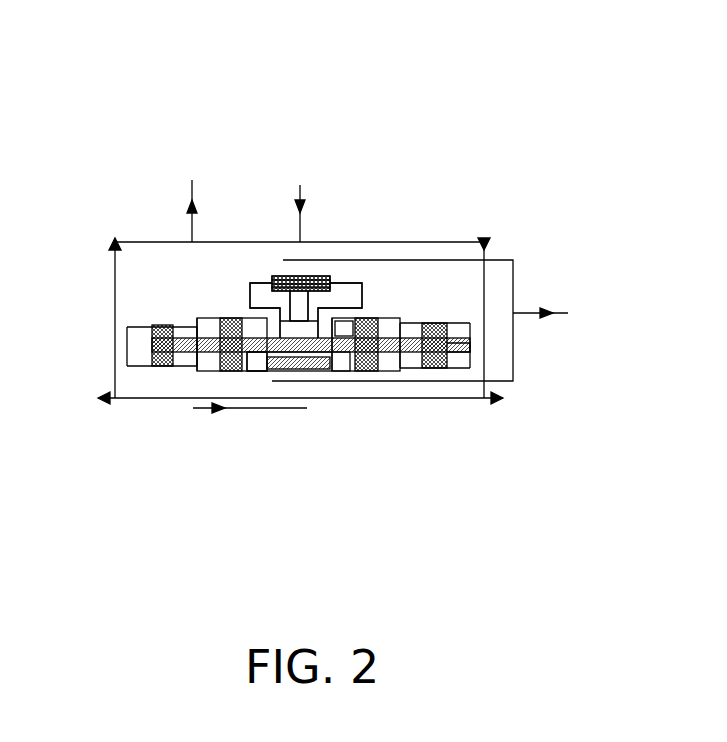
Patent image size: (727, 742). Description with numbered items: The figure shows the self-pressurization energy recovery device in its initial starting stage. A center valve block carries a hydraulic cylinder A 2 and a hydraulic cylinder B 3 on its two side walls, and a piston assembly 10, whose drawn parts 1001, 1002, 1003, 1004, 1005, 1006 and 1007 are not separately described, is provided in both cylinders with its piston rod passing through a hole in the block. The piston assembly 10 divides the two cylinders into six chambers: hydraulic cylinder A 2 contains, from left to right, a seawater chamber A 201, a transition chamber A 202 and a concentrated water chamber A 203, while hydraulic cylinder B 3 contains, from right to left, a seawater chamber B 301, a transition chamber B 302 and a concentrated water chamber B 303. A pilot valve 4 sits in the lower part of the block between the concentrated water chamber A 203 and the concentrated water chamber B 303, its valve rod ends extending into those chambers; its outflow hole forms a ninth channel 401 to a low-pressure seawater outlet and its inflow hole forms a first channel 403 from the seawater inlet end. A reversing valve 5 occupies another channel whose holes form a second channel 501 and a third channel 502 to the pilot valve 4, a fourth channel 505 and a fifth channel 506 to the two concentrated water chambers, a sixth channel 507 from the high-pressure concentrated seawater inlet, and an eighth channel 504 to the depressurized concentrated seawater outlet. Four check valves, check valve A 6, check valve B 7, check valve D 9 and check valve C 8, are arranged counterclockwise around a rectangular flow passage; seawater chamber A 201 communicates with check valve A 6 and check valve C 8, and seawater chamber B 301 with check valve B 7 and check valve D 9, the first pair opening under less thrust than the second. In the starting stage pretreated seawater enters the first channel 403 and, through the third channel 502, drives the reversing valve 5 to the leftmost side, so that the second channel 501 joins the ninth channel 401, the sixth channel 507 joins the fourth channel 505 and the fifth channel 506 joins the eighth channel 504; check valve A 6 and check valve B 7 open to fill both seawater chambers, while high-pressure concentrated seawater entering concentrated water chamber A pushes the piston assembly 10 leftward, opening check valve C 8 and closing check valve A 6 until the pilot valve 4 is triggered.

The hydraulic cylinder A 2 is at (70, 316).
The seawater chamber A 201 is at (140, 356).
The transition chamber A 202 is at (150, 344).
The concentrated water chamber A 203 is at (152, 327).
The hydraulic cylinder B 3 is at (583, 342).
The seawater chamber B 301 is at (445, 344).
The transition chamber B 302 is at (450, 347).
The concentrated water chamber B 303 is at (460, 345).
The pilot valve 4 is at (330, 370).
The ninth channel 401 is at (267, 370).
The first channel 403 is at (303, 370).
The reversing valve 5 is at (362, 283).
The second channel 501 is at (250, 283).
The third channel 502 is at (332, 278).
The eighth channel 504 is at (300, 276).
The fourth channel 505 is at (285, 292).
The fifth channel 506 is at (292, 276).
The sixth channel 507 is at (308, 276).
The check valve A 6 is at (103, 398).
The check valve B 7 is at (497, 398).
The check valve C 8 is at (114, 242).
The check valve D 9 is at (484, 242).
The piston assembly 10 is at (103, 430).
The first support block 1001 is at (163, 366).
The first support housing 1002 is at (176, 366).
The second support block 1003 is at (223, 366).
The lower support portion 1004 is at (267, 352).
The third support block 1005 is at (402, 355).
The second support housing 1006 is at (410, 350).
The fourth support block 1007 is at (426, 355).